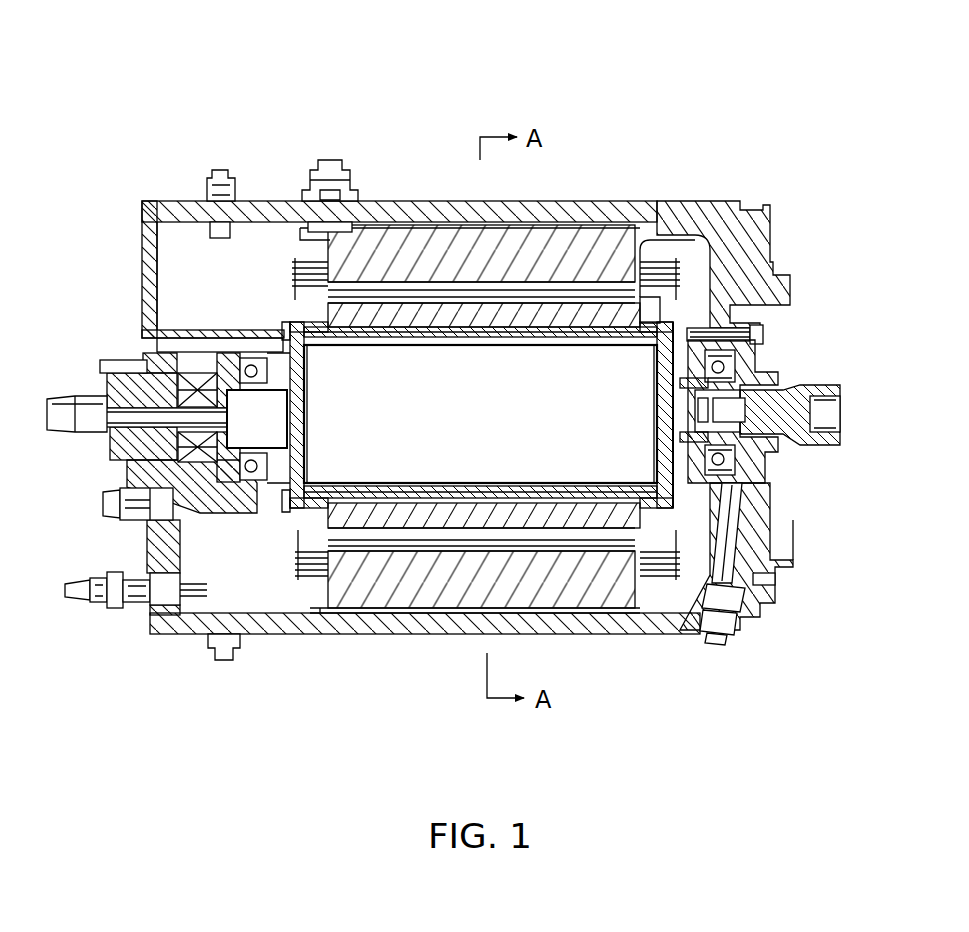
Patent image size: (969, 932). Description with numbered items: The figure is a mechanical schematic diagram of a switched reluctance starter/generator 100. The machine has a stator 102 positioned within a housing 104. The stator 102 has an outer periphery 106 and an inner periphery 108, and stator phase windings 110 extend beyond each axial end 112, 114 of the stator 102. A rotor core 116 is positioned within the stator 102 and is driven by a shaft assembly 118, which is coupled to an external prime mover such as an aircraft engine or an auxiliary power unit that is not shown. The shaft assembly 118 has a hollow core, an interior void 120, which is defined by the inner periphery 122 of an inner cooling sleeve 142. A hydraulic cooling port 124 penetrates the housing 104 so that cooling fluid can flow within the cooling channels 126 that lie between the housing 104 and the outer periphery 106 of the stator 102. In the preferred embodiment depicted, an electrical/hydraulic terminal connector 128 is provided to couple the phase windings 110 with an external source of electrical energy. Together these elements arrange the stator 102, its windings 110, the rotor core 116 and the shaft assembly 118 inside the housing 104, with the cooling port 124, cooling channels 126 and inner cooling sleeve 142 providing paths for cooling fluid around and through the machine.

The switched reluctance starter/generator 100 is at (456, 92).
The stator 102 is at (604, 240).
The housing 104 is at (710, 212).
The outer periphery 106 is at (565, 227).
The inner periphery 108 is at (693, 342).
The stator phase windings 110 is at (290, 276).
The axial end 112 is at (210, 163).
The axial end 114 is at (640, 248).
The rotor core 116 is at (713, 636).
The shaft assembly 118 is at (256, 560).
The interior void 120 is at (437, 409).
The inner periphery 122 is at (567, 492).
The hydraulic cooling port 124 is at (330, 160).
The cooling channels 126 is at (400, 201).
The electrical/hydraulic terminal connector 128 is at (96, 612).
The inner cooling sleeve 142 is at (400, 490).